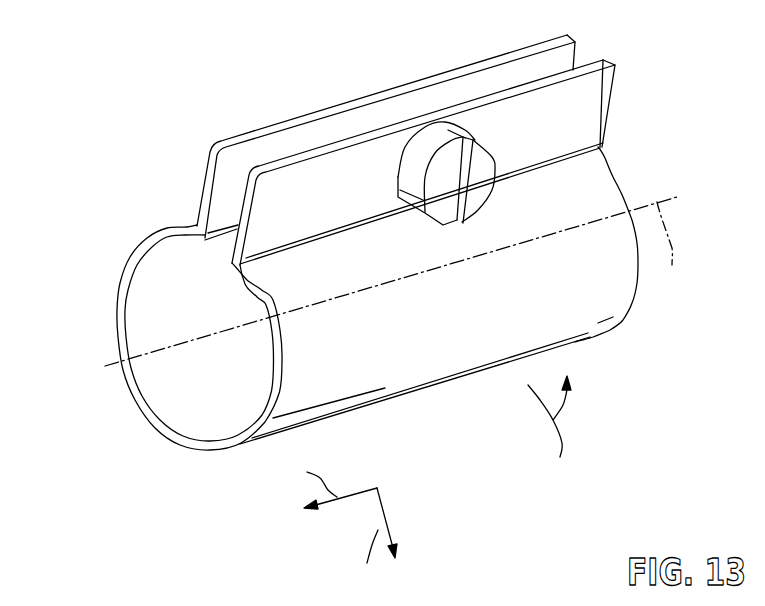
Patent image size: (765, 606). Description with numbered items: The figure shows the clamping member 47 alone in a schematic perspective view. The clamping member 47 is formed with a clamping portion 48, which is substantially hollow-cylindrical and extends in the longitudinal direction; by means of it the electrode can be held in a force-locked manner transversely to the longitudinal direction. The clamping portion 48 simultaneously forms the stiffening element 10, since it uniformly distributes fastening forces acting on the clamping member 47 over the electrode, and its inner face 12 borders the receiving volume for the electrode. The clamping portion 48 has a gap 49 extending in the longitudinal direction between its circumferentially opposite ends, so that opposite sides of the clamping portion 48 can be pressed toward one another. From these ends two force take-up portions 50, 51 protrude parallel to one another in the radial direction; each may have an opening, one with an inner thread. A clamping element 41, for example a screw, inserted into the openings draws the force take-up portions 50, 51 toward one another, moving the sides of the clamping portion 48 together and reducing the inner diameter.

The stiffening element 10 is at (152, 125).
The clamping portion 48 is at (118, 338).
The inner face 12 is at (155, 367).
The force take-up portion 50 is at (210, 180).
The force take-up portion 51 is at (248, 182).
The gap 49 is at (208, 258).
The clamping element 41 is at (432, 147).
The clamping member 47 is at (440, 432).